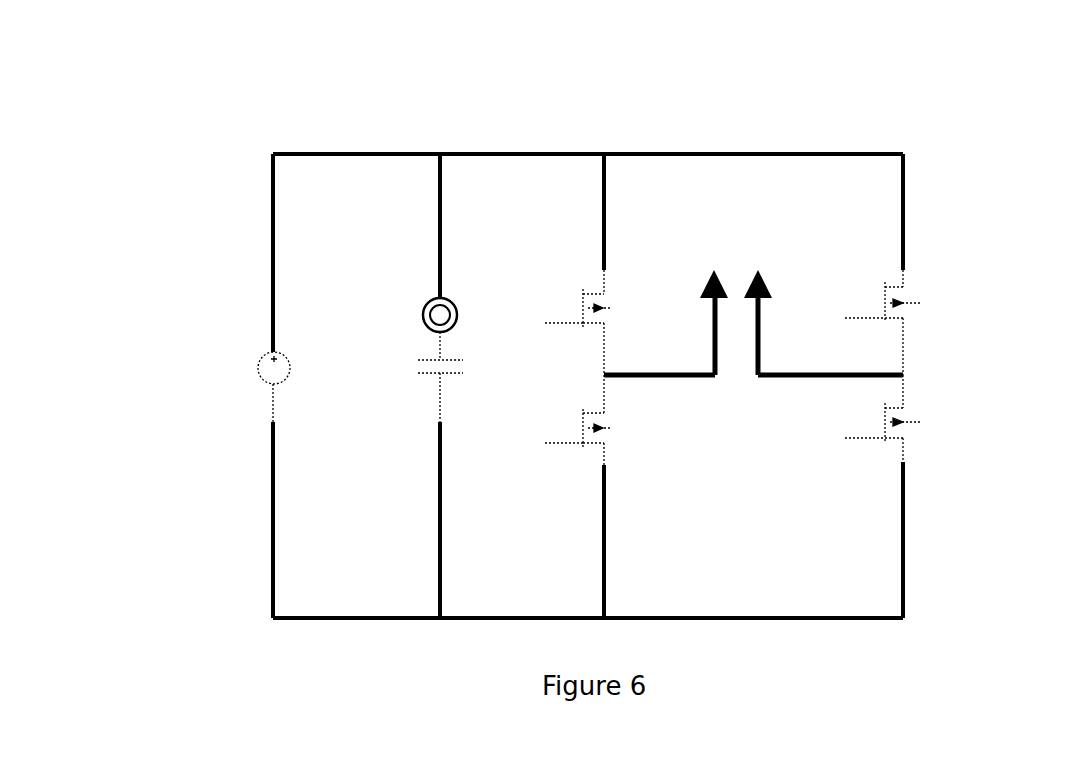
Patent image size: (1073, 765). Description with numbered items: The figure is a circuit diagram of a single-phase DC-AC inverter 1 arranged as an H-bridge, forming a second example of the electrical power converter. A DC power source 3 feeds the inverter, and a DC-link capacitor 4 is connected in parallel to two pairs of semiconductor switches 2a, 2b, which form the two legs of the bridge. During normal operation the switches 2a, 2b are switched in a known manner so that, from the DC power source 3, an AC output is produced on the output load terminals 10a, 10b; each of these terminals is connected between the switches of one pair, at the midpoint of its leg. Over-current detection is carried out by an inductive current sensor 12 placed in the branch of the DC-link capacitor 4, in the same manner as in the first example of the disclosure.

The power converter circuit 1 is at (972, 132).
The first switching elements (transistors) 2a is at (575, 280).
The second switching elements (transistors) 2b is at (843, 288).
The DC voltage source 3 is at (262, 353).
The capacitor 4 is at (425, 377).
The first current path 10a is at (675, 378).
The second current path 10b is at (788, 378).
The current sensor 12 is at (420, 303).